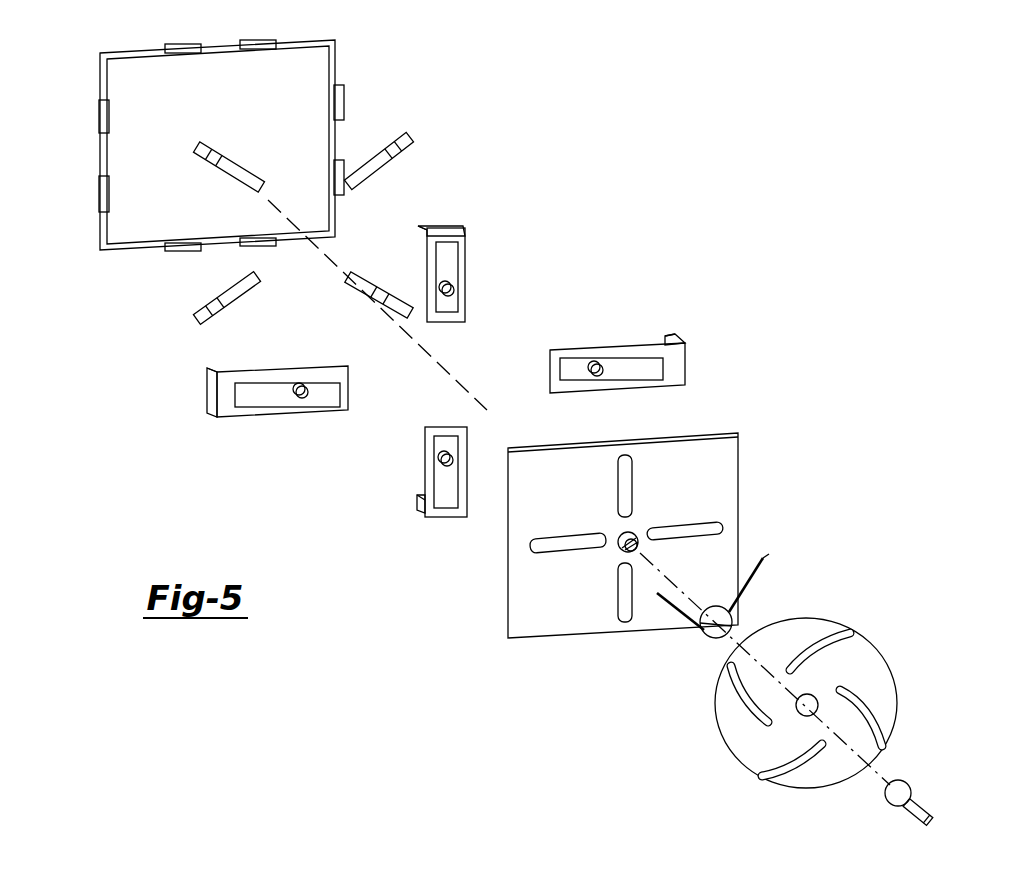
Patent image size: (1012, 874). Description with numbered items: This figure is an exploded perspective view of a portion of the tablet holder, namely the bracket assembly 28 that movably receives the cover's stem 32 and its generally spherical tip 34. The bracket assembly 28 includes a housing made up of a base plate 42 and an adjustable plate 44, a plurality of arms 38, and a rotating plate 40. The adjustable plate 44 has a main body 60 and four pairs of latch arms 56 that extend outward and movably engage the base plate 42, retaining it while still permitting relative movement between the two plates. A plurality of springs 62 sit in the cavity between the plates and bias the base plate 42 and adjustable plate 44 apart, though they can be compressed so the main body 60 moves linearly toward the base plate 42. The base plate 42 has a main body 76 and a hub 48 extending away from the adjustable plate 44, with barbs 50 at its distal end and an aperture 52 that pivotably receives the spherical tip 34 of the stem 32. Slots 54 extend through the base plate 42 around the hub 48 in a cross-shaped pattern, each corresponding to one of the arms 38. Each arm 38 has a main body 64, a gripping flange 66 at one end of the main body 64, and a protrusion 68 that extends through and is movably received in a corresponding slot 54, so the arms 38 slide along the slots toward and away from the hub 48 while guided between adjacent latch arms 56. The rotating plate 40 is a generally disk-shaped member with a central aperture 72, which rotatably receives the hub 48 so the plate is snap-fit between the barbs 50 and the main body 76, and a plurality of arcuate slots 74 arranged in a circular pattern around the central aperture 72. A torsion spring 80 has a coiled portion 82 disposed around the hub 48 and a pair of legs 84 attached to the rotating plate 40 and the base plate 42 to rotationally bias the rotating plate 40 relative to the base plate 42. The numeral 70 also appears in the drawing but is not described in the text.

The bracket assembly 28 is at (781, 181).
The stem 32 is at (928, 812).
The spherical tip 34 is at (906, 782).
The arms 38 is at (445, 372).
The rotating plate 40 is at (809, 701).
The base plate 42 is at (644, 524).
The adjustable plate 44 is at (232, 142).
The hub 48 is at (622, 533).
The barbs 50 is at (636, 533).
The aperture 52 is at (622, 548).
The slots 54 is at (617, 468).
The latch arms 56 is at (200, 55).
The main body 60 is at (137, 80).
The springs 62 is at (215, 150).
The main body 64 is at (463, 285).
The gripping flange 66 is at (450, 227).
The protrusion 68 is at (452, 292).
The flange edge 70 is at (212, 368).
The central aperture 72 is at (820, 700).
The arcuate slots 74 is at (873, 624).
The main body 76 is at (735, 468).
The torsion spring 80 is at (715, 640).
The coiled portion 82 is at (716, 605).
The legs 84 is at (766, 558).